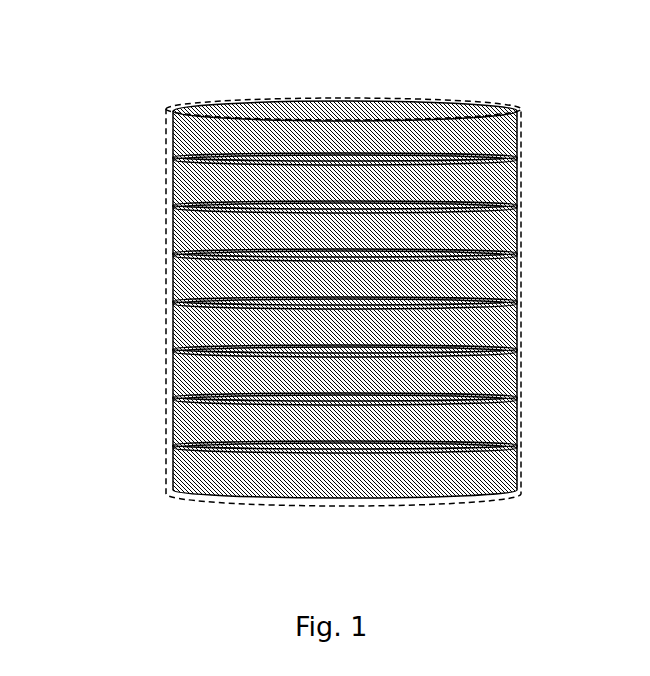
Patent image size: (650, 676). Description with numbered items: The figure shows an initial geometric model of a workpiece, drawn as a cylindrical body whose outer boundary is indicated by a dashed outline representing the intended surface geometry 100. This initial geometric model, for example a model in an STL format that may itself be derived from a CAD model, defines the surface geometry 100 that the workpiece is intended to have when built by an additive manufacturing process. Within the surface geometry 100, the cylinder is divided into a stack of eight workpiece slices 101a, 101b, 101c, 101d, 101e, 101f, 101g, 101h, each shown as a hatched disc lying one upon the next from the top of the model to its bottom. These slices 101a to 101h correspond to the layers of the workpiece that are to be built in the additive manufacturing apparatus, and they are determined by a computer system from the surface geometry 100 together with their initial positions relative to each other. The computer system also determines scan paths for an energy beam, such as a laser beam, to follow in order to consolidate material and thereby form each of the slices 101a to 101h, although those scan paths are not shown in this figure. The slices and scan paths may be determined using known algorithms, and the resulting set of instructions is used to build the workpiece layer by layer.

The intended surface geometry 100 is at (505, 98).
The slice 101a is at (193, 140).
The slice 101b is at (193, 186).
The slice 101c is at (193, 233).
The slice 101d is at (193, 280).
The slice 101e is at (193, 328).
The slice 101f is at (193, 375).
The slice 101g is at (193, 423).
The slice 101h is at (193, 477).